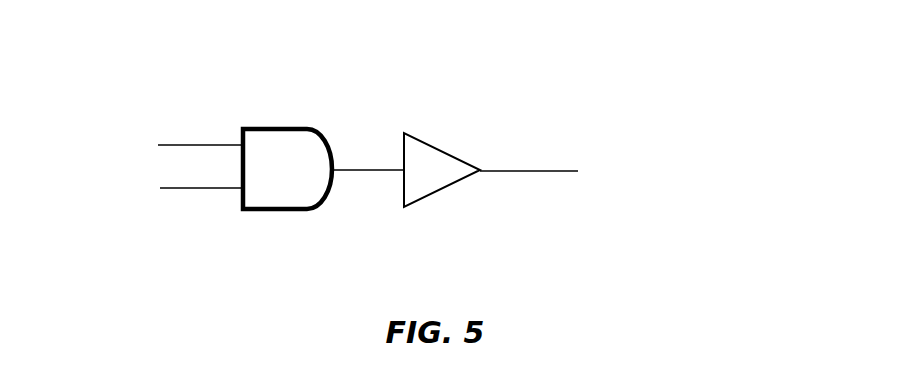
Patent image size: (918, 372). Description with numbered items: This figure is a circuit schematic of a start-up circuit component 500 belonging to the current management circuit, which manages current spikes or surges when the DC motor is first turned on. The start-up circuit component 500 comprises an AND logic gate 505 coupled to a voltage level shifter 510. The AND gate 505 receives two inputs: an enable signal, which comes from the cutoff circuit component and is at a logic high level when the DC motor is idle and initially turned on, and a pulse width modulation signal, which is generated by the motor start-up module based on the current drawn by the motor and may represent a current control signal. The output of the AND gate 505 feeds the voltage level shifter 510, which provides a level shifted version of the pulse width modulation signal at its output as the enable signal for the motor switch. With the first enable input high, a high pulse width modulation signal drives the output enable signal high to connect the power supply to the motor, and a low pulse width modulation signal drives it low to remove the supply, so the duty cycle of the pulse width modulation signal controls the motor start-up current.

The start-up circuit component 500 is at (121, 52).
The AND logic gate 505 is at (296, 152).
The voltage level shifter 510 is at (455, 158).